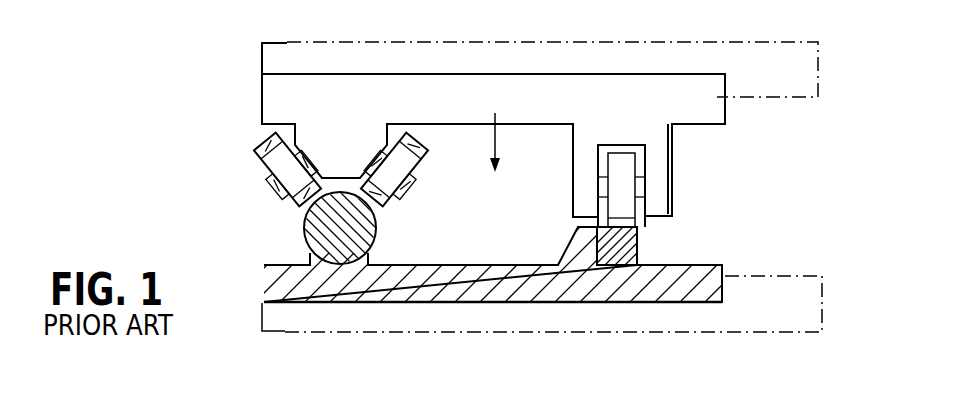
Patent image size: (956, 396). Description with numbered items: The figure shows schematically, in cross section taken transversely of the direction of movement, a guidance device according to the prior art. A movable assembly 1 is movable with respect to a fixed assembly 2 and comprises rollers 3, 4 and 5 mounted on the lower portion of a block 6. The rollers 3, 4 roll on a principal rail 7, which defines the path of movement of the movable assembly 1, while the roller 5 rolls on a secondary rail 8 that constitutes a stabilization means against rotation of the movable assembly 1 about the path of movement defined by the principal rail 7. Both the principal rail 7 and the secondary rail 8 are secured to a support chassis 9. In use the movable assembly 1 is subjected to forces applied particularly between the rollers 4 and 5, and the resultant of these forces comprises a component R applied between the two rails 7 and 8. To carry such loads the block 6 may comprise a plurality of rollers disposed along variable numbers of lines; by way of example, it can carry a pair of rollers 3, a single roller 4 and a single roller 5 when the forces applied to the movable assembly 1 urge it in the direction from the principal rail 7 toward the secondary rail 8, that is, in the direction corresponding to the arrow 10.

The movable assembly 1 is at (487, 143).
The fixed assembly 2 is at (542, 266).
The roller 3 is at (262, 143).
The roller 4 is at (412, 163).
The roller 5 is at (630, 210).
The block 6 is at (302, 100).
The principal rail 7 is at (300, 232).
The secondary rail 8 is at (625, 245).
The support chassis 9 is at (275, 290).
The arrow 10 is at (534, 21).
The component R is at (500, 143).